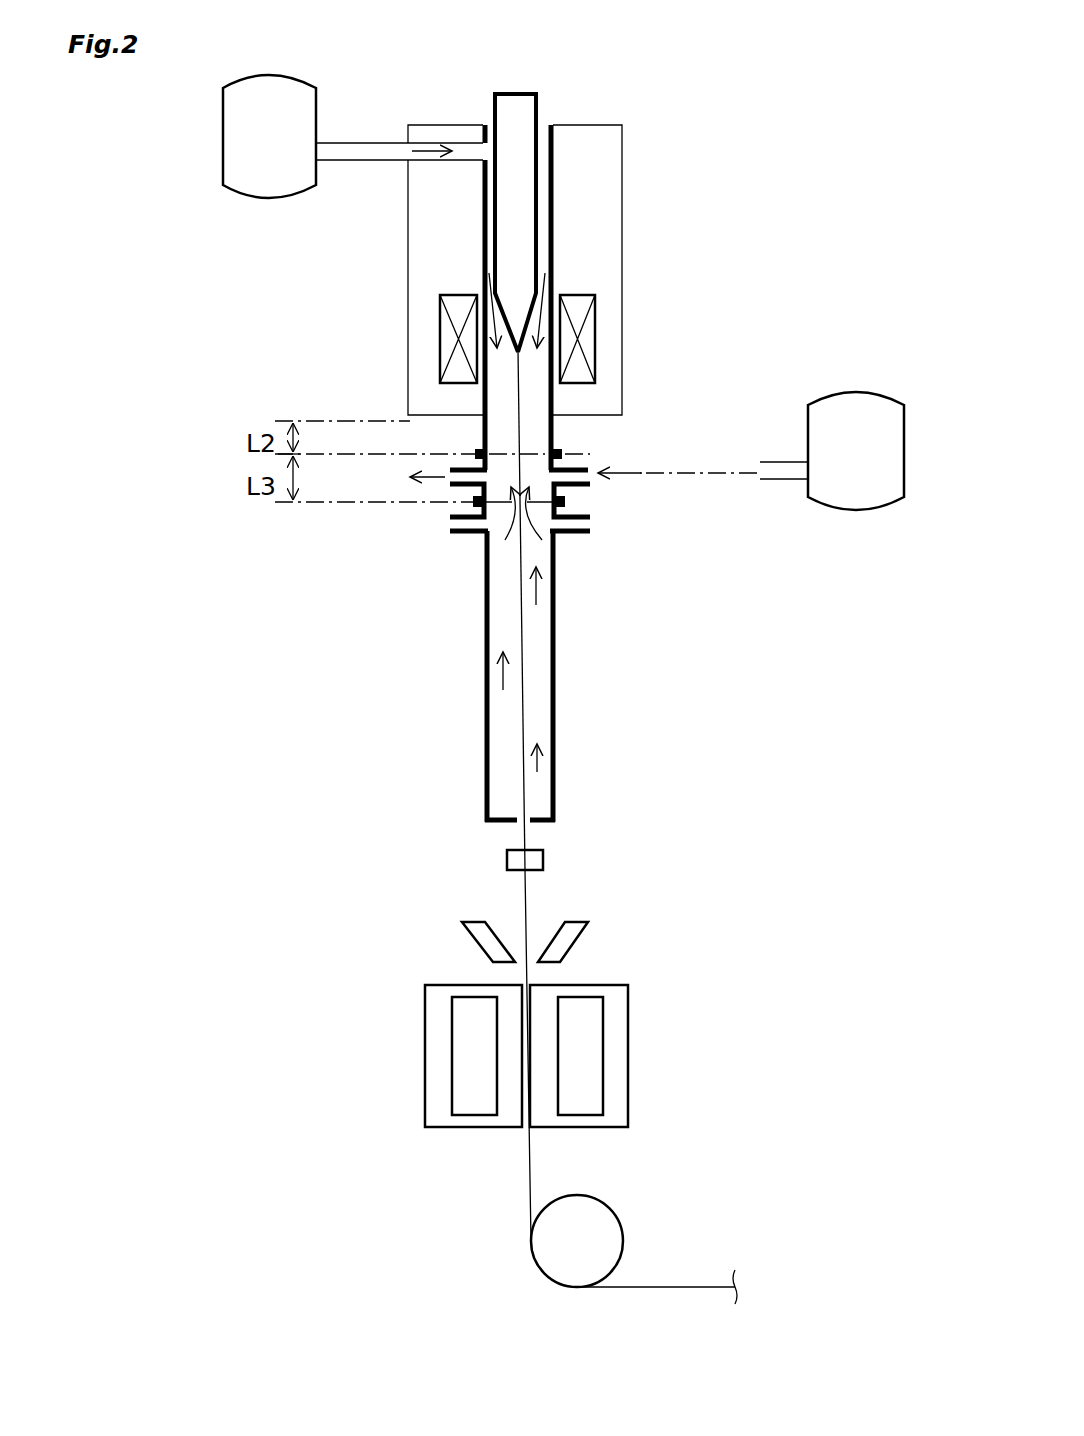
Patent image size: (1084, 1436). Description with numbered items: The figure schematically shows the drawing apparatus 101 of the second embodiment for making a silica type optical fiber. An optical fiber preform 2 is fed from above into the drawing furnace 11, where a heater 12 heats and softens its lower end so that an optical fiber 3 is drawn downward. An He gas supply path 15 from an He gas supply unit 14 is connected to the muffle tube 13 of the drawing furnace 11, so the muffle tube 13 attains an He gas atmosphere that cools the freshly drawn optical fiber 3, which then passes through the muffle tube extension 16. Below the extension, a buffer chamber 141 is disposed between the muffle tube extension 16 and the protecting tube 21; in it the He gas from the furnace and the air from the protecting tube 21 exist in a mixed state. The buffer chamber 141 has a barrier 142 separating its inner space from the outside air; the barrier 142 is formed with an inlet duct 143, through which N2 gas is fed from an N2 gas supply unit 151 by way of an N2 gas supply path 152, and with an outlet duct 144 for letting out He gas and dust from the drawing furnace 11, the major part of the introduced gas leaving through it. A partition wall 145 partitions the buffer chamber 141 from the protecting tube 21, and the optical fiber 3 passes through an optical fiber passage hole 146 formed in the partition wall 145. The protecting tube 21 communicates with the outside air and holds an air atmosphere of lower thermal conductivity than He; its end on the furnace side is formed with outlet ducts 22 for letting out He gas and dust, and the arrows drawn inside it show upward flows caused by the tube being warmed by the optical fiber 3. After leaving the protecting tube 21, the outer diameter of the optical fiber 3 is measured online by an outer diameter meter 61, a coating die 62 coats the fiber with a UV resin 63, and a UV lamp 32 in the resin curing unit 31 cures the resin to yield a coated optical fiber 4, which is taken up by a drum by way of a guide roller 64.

The drawing apparatus 101 is at (750, 74).
The optical fiber preform 2 is at (538, 106).
The optical fiber 3 is at (502, 612).
The coated optical fiber 4 is at (529, 1167).
The drawing furnace 11 is at (566, 270).
The heater 12 is at (596, 358).
The muffle tube 13 is at (552, 202).
The He gas supply unit 14 is at (269, 136).
The He gas supply path 15 is at (373, 162).
The muffle tube extension 16 is at (554, 428).
The protecting tube 21 is at (556, 667).
The outlet ducts 22 is at (473, 534).
The buffer chamber 141 is at (571, 491).
The barrier 142 is at (560, 452).
The inlet duct 143 is at (583, 465).
The outlet duct 144 is at (473, 488).
The partition wall 145 is at (556, 537).
The optical fiber passage hole 146 is at (494, 557).
The N2 gas supply unit 151 is at (856, 451).
The N2 gas supply path 152 is at (777, 480).
The resin curing unit 31 is at (580, 1053).
The UV lamp 32 is at (606, 1088).
The outer diameter meter 61 is at (543, 860).
The coating die 62 is at (573, 933).
The UV resin 63 is at (512, 942).
The guide roller 64 is at (539, 1240).